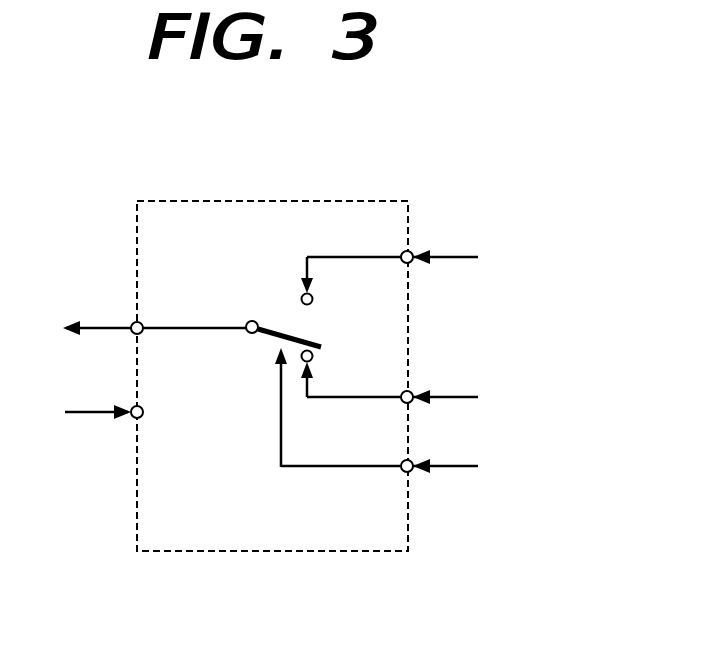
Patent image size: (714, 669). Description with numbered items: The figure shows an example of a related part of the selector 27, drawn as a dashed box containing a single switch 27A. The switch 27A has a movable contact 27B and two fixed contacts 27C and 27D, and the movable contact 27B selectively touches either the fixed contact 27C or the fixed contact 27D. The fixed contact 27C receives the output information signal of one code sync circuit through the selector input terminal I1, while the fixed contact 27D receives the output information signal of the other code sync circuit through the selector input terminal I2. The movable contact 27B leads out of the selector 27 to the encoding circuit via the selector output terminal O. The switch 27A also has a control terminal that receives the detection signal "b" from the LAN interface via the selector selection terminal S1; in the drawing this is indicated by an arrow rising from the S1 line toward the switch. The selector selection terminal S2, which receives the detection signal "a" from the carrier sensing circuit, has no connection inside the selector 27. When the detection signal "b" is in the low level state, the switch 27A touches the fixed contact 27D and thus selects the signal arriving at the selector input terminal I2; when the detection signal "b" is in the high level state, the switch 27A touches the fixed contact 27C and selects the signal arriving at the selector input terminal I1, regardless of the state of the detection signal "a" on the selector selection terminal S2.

The selector 27 is at (348, 202).
The switch 27A is at (279, 319).
The movable contact 27B is at (248, 335).
The fixed contact 27C is at (313, 297).
The fixed contact 27D is at (313, 359).
The selector output terminal O is at (133, 322).
The selector selection terminal S1 is at (412, 472).
The selector selection terminal S2 is at (128, 418).
The selector input terminal I1 is at (413, 252).
The selector input terminal I2 is at (413, 392).